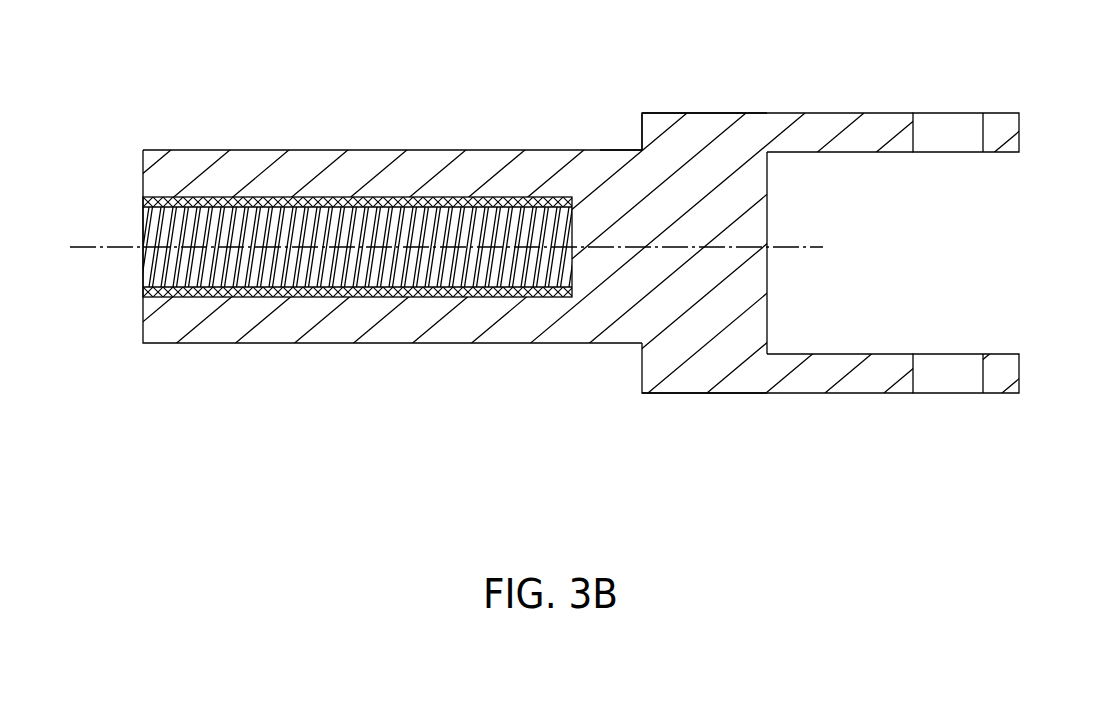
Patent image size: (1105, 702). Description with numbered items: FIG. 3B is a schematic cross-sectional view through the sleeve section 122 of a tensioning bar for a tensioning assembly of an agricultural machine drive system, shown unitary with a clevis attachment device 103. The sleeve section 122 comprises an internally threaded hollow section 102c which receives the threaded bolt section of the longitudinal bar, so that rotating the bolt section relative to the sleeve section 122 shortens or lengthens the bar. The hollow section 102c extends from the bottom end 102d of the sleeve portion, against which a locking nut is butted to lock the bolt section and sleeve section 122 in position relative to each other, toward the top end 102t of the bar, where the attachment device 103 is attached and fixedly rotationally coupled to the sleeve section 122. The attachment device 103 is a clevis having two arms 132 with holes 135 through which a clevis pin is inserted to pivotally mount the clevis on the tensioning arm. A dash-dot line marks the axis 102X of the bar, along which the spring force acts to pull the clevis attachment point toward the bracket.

The internally threaded hollow section 102c is at (160, 257).
The bottom end of the sleeve portion 102d is at (163, 150).
The top end of the longitudinal bar 102t is at (620, 150).
The axis of the bar 102X is at (793, 247).
The sleeve section 122 is at (492, 343).
The attachment device 103 is at (745, 393).
The arms of the clevis 132 is at (857, 113).
The holes 135 is at (958, 152).